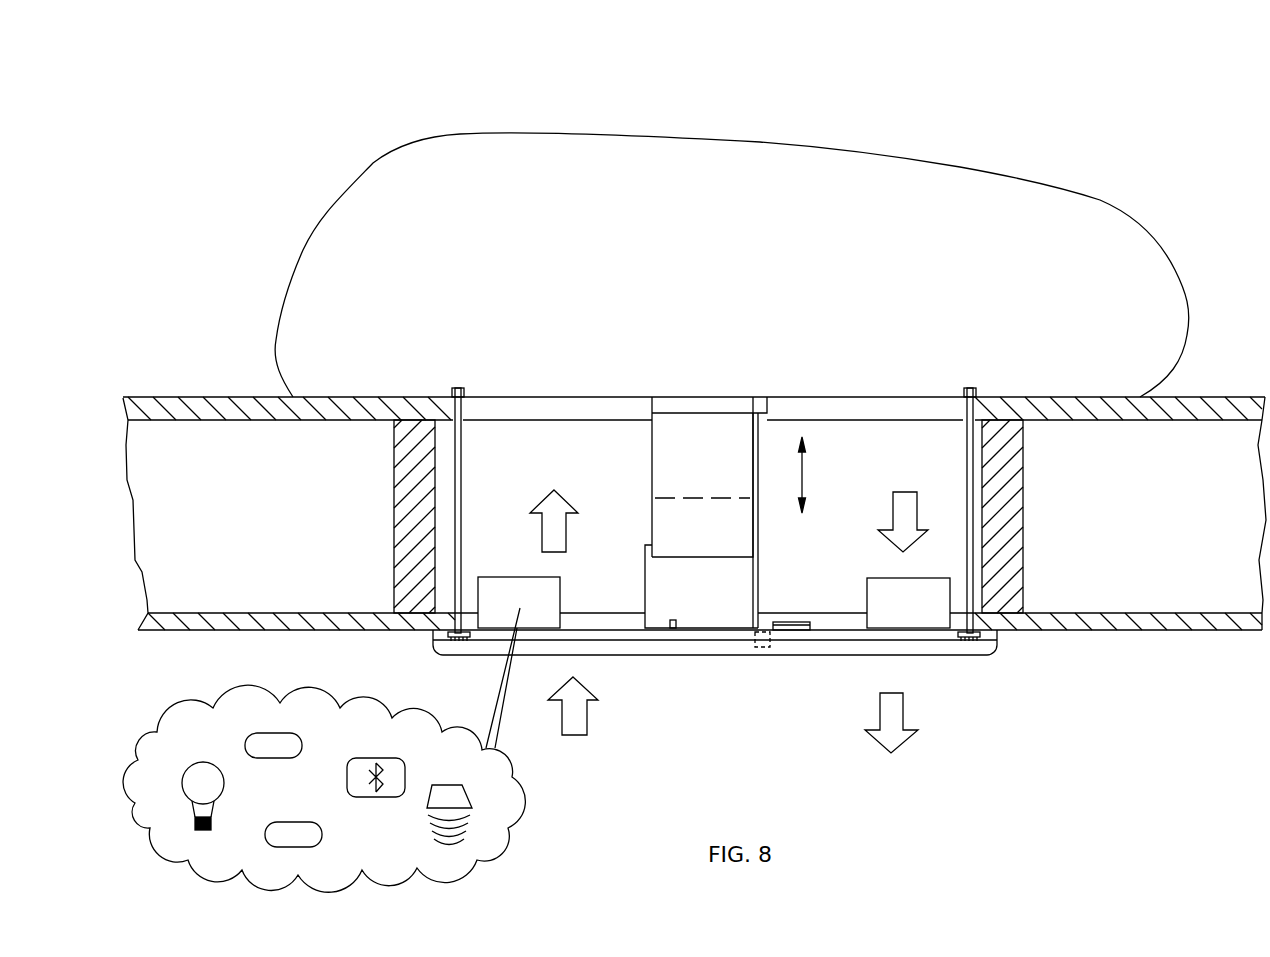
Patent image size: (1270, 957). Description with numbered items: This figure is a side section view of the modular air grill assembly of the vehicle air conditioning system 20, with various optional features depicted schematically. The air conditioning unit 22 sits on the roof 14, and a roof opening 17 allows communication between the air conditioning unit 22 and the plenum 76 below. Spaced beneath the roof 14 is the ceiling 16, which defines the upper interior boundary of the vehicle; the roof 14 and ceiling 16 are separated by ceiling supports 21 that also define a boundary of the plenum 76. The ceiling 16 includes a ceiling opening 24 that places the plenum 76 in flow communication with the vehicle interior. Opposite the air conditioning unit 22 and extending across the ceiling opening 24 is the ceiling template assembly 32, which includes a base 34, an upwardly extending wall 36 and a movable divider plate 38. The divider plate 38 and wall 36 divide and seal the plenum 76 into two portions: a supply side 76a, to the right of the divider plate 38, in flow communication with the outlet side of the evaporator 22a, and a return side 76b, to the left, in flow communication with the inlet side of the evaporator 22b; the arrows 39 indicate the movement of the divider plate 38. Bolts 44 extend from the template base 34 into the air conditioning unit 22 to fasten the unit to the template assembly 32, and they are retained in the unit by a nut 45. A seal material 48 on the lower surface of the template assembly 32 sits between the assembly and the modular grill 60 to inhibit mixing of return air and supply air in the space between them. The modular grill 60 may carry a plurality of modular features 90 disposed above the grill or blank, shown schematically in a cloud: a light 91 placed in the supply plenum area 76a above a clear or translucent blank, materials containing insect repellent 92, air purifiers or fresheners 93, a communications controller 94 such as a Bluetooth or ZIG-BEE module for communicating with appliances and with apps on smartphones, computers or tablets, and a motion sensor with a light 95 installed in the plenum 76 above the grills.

The roof 14 is at (1210, 397).
The ceiling 16 is at (1220, 630).
The roof opening 17 is at (963, 410).
The air conditioning system 20 is at (1085, 113).
The ceiling supports 21 is at (393, 570).
The air conditioning unit 22 is at (765, 127).
The evaporator outlet side 22a is at (943, 357).
The evaporator inlet side 22b is at (557, 367).
The ceiling opening 24 is at (470, 637).
The ceiling template assembly 32 is at (618, 500).
The base 34 is at (827, 628).
The upwardly extending wall 36 is at (732, 597).
The movable divider plate 38 is at (750, 437).
The vertical movement arrow 39 is at (805, 477).
The bolts 44 is at (457, 480).
The nut 45 is at (453, 389).
The seal material 48 is at (757, 650).
The modular grill 60 is at (817, 672).
The plenum 76 is at (918, 430).
The supply side of the plenum 76a is at (960, 462).
The return side of the plenum 76b is at (497, 442).
The modular features 90 is at (508, 587).
The light 91 is at (180, 792).
The insect repellent 92 is at (276, 733).
The air purifiers or fresheners 93 is at (295, 822).
The communications controller 94 is at (388, 798).
The motion sensor with a light 95 is at (470, 795).